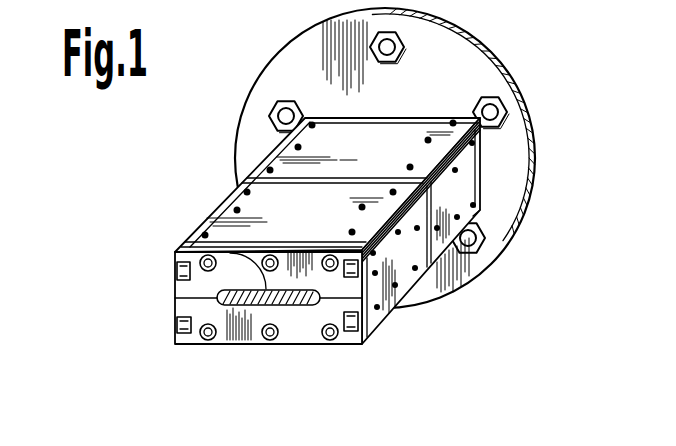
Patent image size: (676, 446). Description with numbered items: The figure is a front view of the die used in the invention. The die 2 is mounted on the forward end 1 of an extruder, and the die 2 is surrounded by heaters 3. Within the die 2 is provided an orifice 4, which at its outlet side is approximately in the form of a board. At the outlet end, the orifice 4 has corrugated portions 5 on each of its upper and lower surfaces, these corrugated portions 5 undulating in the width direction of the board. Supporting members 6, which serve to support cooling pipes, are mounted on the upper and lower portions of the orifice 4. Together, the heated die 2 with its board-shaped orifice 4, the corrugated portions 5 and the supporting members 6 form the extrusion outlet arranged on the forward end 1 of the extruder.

The forward end of an extruder 1 is at (468, 68).
The die 2 is at (227, 181).
The heaters 3 is at (333, 127).
The orifice 4 is at (248, 307).
The corrugated portions 5 is at (175, 255).
The supporting members 6 is at (173, 331).